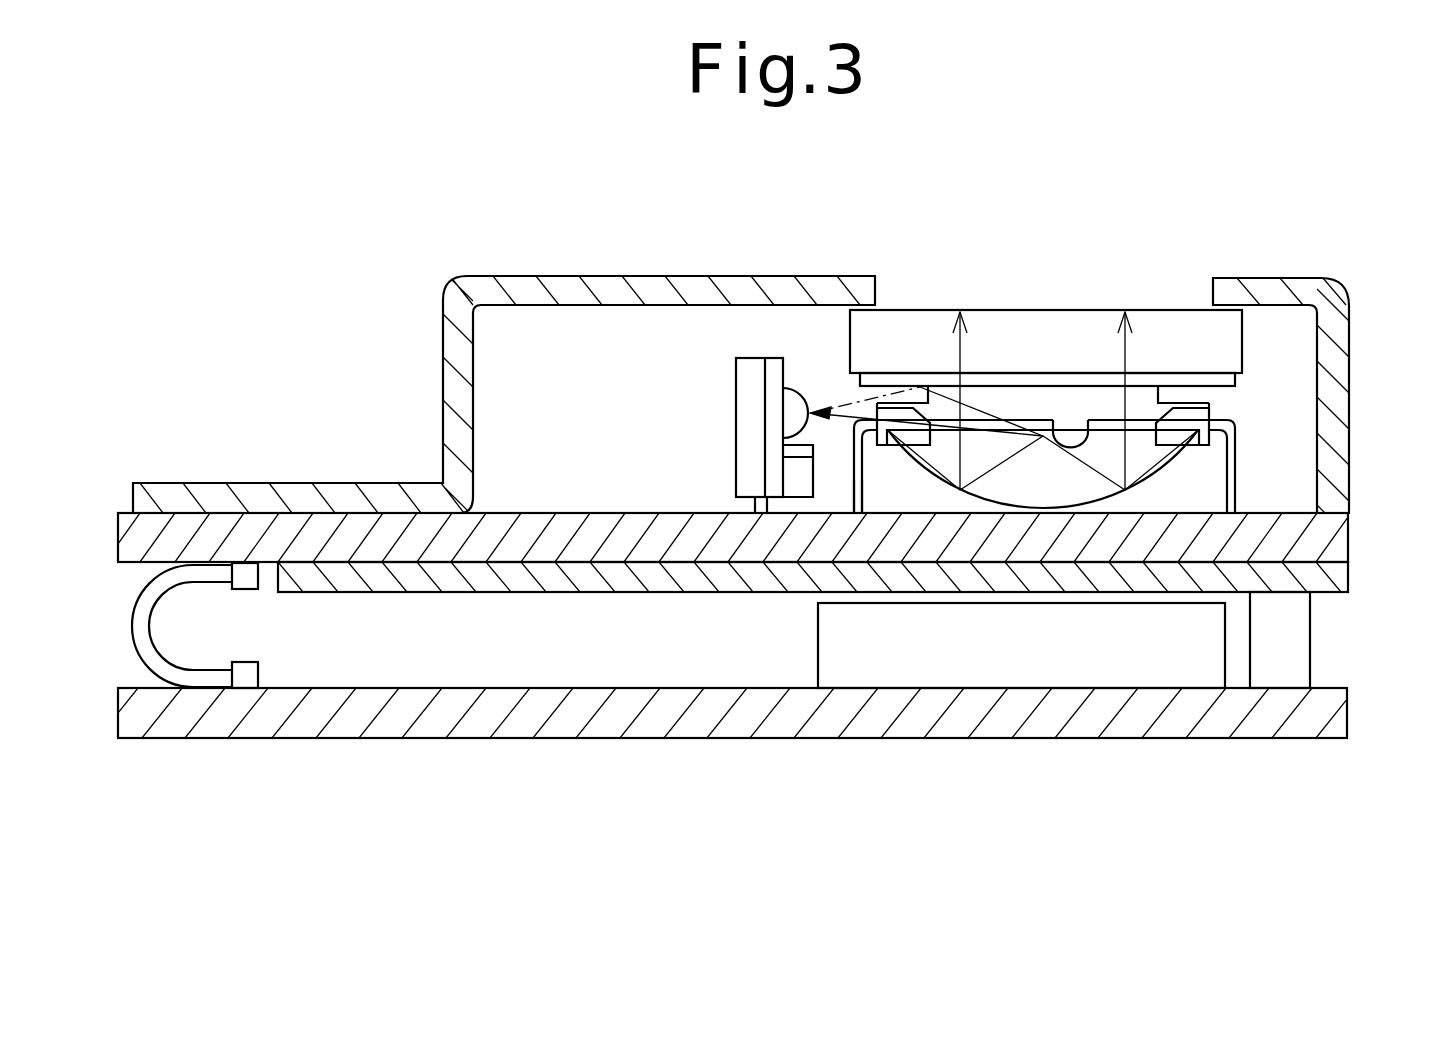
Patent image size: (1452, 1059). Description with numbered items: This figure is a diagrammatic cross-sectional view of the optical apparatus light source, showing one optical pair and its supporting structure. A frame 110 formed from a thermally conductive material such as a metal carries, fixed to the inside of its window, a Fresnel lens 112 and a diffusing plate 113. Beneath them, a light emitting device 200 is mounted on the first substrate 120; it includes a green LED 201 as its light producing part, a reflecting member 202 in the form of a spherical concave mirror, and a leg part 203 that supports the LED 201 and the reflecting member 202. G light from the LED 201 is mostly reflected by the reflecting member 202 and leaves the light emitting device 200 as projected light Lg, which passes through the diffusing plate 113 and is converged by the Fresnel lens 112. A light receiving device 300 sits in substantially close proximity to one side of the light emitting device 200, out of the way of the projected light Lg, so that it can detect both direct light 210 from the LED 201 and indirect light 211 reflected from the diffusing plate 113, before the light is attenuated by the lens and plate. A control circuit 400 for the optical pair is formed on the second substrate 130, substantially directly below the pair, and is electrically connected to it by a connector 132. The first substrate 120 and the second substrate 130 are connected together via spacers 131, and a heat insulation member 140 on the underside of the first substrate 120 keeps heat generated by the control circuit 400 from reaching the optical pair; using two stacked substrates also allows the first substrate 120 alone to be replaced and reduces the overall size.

The frame 110 is at (593, 278).
The Fresnel lens 112 is at (1244, 346).
The diffusing plate 113 is at (1236, 383).
The first substrate 120 is at (1350, 535).
The second substrate 130 is at (1349, 713).
The spacer 131 is at (1311, 645).
The connector 132 is at (152, 630).
The heat insulation member 140 is at (1350, 573).
The light emitting device 200 is at (1047, 511).
The LED 201 is at (1041, 438).
The reflecting member 202 is at (942, 478).
The leg part 203 is at (844, 492).
The direct light 210 is at (846, 415).
The indirect light 211 is at (978, 416).
The light receiving device 300 is at (735, 405).
The control circuit 400 is at (808, 637).
The projected light Lg is at (958, 358).